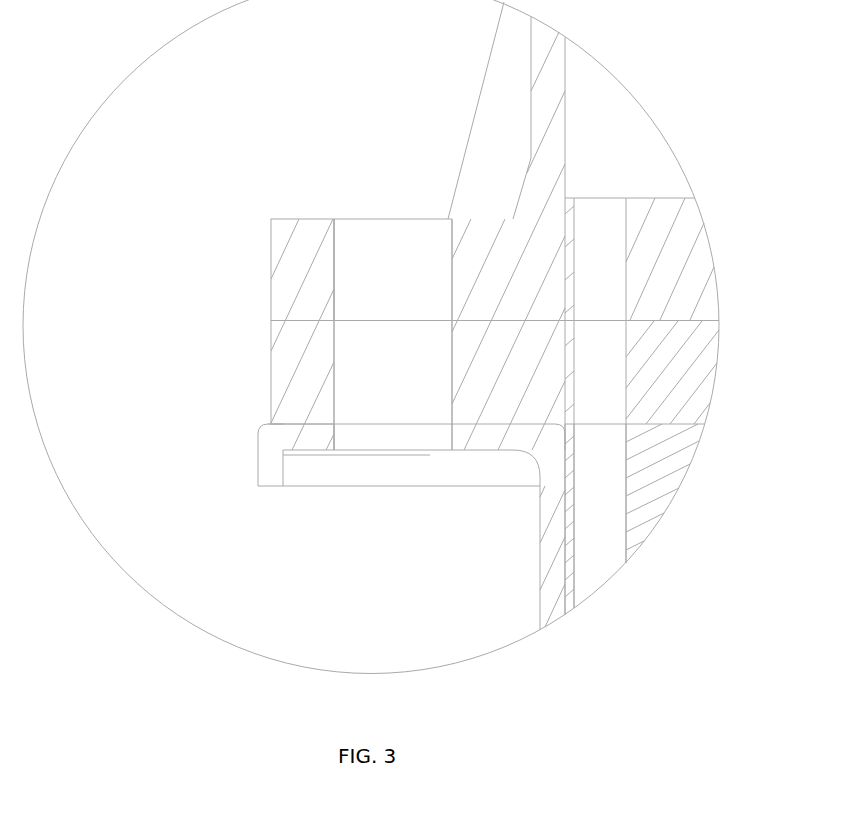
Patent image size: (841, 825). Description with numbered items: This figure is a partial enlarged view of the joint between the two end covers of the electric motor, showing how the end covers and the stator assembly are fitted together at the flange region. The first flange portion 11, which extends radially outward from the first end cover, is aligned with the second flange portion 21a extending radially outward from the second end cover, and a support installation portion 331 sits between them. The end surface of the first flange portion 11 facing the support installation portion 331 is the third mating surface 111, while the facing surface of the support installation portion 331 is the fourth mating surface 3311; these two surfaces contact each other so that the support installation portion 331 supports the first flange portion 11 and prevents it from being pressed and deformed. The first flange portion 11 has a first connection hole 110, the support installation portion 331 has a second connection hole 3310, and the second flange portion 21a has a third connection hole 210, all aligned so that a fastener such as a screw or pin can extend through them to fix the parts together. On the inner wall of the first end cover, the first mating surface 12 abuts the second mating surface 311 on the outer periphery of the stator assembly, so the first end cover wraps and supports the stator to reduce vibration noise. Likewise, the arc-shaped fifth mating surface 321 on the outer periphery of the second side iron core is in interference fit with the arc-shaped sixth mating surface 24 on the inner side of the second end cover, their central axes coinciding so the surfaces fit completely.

The sixth mating surface 24 is at (558, 227).
The fifth mating surface 321 is at (557, 277).
The second flange portion 21a is at (303, 248).
The third connection hole 210 is at (416, 275).
The support installation portion 331 is at (302, 350).
The second connection hole 3310 is at (367, 363).
The fourth mating surface 3311 is at (276, 421).
The third mating surface 111 is at (273, 439).
The first flange portion 11 is at (279, 437).
The first connection hole 110 is at (398, 436).
The second mating surface 311 is at (555, 510).
The first mating surface 12 is at (555, 561).